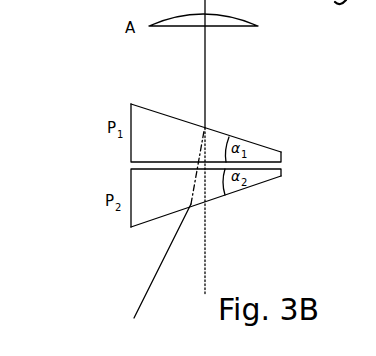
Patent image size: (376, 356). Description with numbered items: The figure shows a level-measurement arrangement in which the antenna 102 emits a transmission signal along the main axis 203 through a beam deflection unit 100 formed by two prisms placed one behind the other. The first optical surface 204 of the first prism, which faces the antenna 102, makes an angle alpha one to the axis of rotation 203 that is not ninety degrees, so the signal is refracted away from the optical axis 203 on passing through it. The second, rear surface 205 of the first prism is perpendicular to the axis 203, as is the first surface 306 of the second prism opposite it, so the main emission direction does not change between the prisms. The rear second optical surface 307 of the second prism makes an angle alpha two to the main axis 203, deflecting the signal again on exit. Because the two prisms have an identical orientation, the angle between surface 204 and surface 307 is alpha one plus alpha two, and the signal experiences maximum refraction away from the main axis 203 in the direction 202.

The beam deflection unit 100 is at (108, 170).
The antenna 102 is at (221, 22).
The direction of maximum refraction 202 is at (145, 290).
The main axis 203 is at (204, 272).
The first optical surface of the first prism 204 is at (131, 158).
The second, rear surface of the first prism 205 is at (160, 116).
The first surface of the second prism 306 is at (157, 209).
The rear second optical surface of the second prism 307 is at (217, 197).